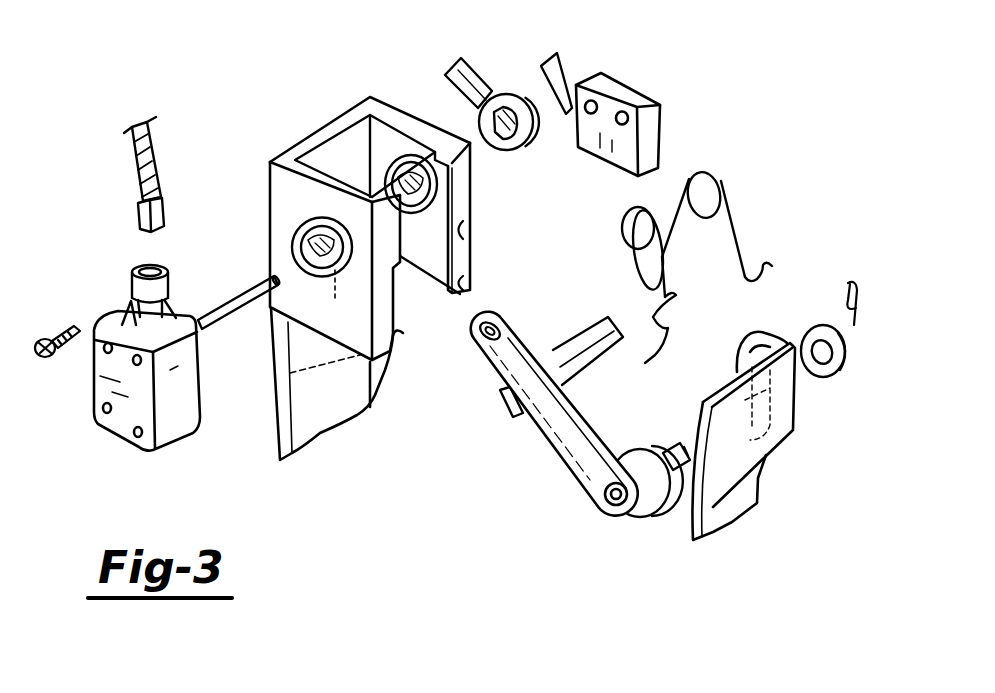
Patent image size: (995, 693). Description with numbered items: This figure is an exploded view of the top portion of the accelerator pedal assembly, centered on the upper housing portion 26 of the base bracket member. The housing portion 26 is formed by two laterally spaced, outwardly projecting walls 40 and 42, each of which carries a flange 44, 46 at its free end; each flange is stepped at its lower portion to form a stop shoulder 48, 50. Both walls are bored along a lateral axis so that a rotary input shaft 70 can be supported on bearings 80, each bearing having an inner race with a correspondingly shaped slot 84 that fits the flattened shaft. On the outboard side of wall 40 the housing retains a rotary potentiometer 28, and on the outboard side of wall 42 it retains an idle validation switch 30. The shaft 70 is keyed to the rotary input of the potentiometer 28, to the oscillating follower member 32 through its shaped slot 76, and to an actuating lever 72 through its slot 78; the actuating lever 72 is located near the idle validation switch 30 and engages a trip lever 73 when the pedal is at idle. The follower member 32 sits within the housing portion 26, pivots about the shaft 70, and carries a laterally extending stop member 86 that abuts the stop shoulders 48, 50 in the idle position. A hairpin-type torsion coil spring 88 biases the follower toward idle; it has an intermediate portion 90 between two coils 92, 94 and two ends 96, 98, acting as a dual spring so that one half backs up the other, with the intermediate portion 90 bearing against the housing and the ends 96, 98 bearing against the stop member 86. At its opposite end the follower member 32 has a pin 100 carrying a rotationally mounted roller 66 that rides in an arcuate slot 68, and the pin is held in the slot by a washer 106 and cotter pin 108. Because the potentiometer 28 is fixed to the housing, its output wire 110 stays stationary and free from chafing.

The upper housing portion 26 is at (296, 158).
The rotary potentiometer 28 is at (130, 445).
The idle validation switch 30 is at (664, 119).
The oscillating follower member 32 is at (567, 470).
The wall 40 is at (270, 188).
The wall 42 is at (370, 94).
The flange 44 is at (372, 422).
The flange 46 is at (473, 283).
The stop shoulder 48 is at (403, 262).
The stop shoulder 50 is at (468, 229).
The roller 66 is at (657, 518).
The arcuate slot 68 is at (770, 417).
The rotary input shaft 70 is at (228, 330).
The actuating lever 72 is at (475, 66).
The trip lever 73 is at (562, 57).
The slot 76 is at (480, 350).
The slot 78 is at (513, 150).
The bearings 80 is at (293, 245).
The slot 84 is at (274, 330).
The stop member 86 is at (507, 410).
The torsion coil spring 88 is at (738, 233).
The intermediate portion 90 is at (660, 249).
The coil 92 is at (618, 244).
The coil 94 is at (719, 188).
The end 96 is at (645, 364).
The end 98 is at (772, 266).
The pin 100 is at (695, 447).
The washer 106 is at (848, 360).
The cotter pin 108 is at (842, 298).
The wire 110 is at (135, 183).